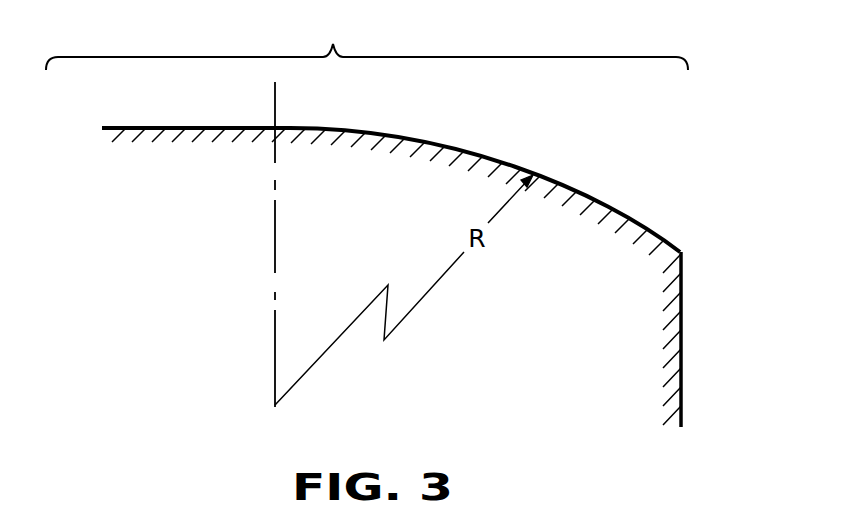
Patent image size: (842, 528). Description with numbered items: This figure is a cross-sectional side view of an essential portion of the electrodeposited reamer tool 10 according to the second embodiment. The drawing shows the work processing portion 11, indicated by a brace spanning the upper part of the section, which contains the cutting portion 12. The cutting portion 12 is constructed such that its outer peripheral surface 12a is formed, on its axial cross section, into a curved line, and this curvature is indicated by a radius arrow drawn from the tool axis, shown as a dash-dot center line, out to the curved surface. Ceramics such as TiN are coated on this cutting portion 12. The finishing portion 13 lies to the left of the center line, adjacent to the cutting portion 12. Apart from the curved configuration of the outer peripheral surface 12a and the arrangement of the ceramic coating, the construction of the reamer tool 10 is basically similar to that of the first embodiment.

The electrodeposited reamer tool 10 is at (687, 165).
The work processing portion 11 is at (367, 42).
The cutting portion 12 is at (561, 307).
The outer peripheral surface 12a is at (503, 157).
The finishing portion 13 is at (166, 308).